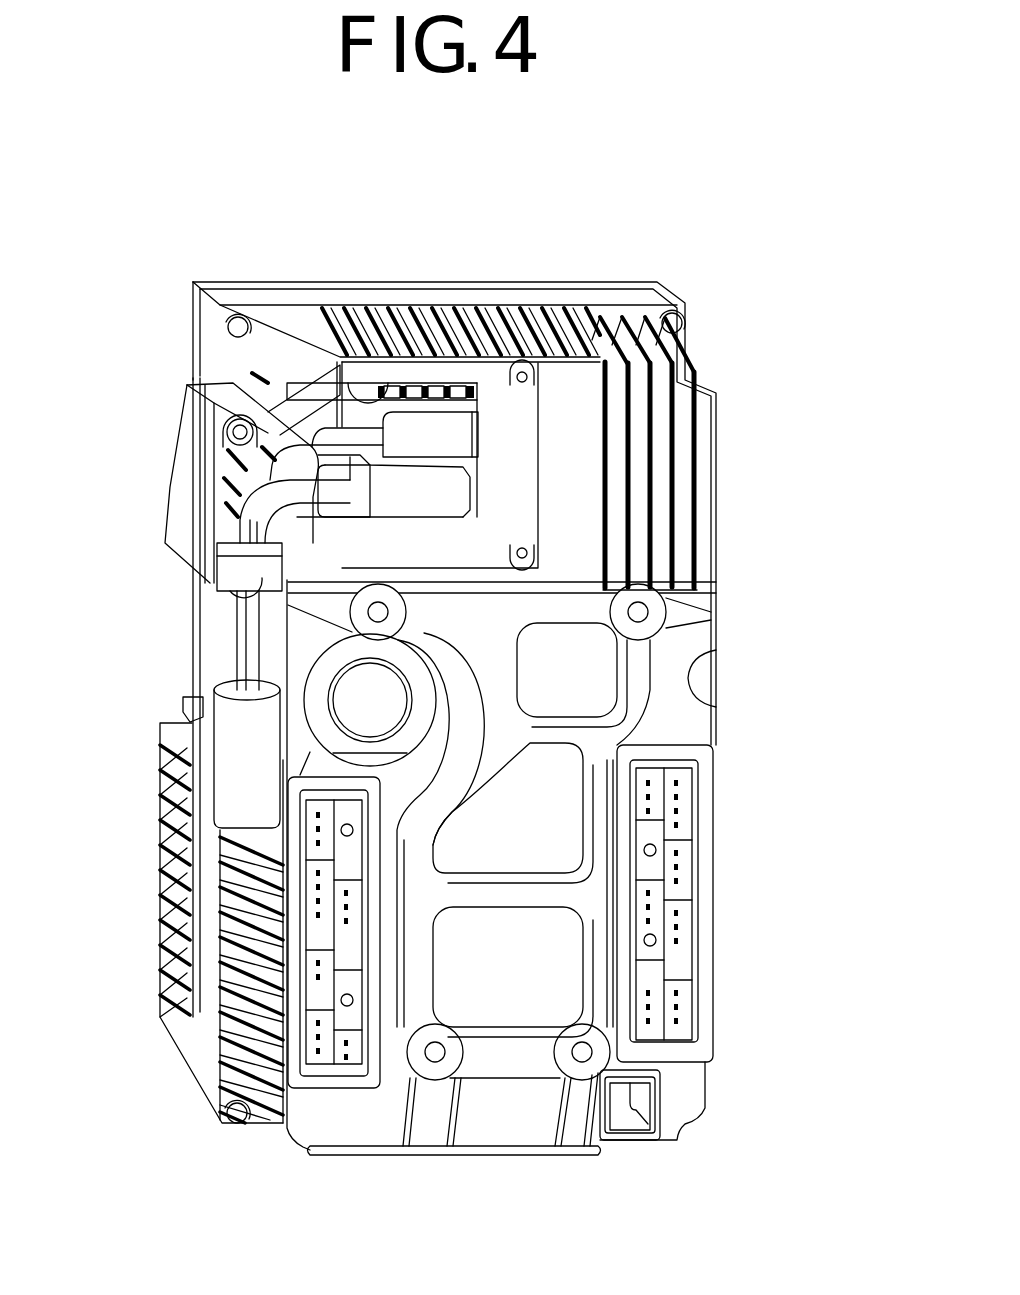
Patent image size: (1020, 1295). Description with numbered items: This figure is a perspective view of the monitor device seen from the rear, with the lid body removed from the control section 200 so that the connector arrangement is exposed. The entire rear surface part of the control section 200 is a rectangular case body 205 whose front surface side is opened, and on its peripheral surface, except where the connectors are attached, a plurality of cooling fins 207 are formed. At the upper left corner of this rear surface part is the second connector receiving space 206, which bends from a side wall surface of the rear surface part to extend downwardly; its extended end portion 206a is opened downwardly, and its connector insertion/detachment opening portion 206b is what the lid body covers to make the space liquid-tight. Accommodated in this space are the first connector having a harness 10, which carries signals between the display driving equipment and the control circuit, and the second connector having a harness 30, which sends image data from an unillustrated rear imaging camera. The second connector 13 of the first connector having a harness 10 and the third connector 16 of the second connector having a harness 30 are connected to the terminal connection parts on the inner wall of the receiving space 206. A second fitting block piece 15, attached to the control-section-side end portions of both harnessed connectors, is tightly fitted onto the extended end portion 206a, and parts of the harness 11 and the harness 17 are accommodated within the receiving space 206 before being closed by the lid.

The control section 200 is at (812, 250).
The rectangular case body 205 is at (690, 1083).
The second connector receiving space 206 is at (323, 413).
The extended end portion 206a is at (217, 527).
The connector insertion/detachment opening portion 206b is at (378, 376).
The cooling fins 207 is at (650, 548).
The third connector 16 is at (430, 427).
The second connector 13 is at (230, 418).
The second fitting block piece 15 is at (210, 590).
The harness 17 is at (243, 612).
The first connector having a harness 10 is at (203, 655).
The harness 11 is at (183, 697).
The second connector having a harness 30 is at (226, 758).